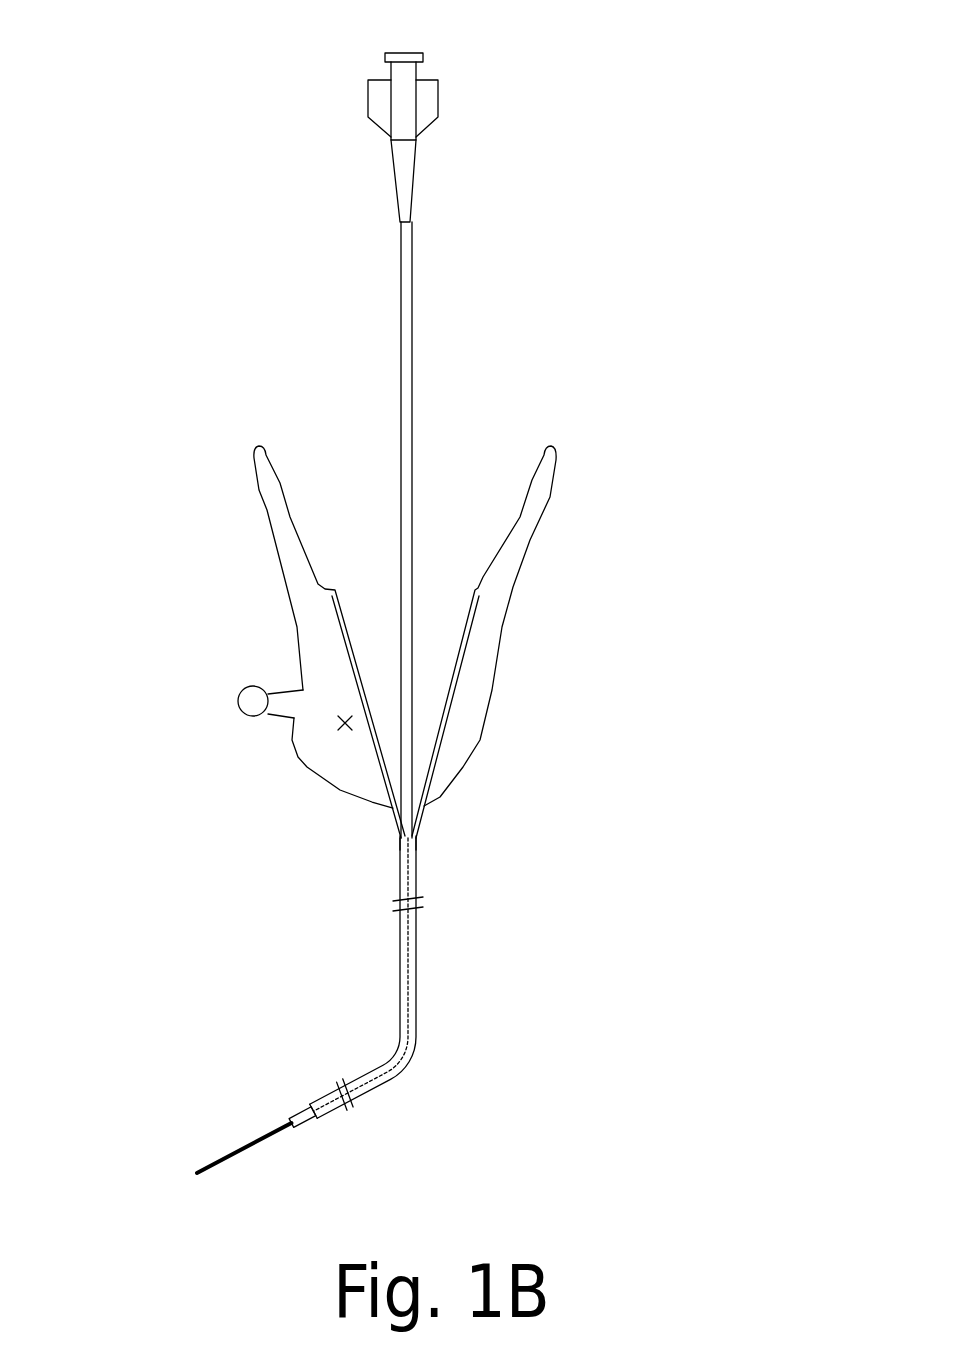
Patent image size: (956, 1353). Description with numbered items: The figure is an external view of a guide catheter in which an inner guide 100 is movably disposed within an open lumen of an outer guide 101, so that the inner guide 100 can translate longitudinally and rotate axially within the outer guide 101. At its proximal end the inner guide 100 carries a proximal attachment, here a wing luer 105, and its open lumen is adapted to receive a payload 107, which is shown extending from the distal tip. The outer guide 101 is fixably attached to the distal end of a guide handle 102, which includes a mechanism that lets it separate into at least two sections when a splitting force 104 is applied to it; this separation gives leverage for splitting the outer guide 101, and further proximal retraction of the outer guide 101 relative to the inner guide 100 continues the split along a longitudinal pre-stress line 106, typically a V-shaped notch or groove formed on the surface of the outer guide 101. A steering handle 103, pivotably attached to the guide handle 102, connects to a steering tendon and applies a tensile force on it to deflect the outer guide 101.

The inner guide 100 is at (197, 1052).
The outer guide 101 is at (310, 978).
The guide handle 102 is at (252, 694).
The steering handle 103 is at (178, 735).
The splitting force 104 is at (405, 617).
The wing luer 105 is at (531, 111).
The pre-stress line 106 is at (569, 776).
The payload 107 is at (350, 1146).